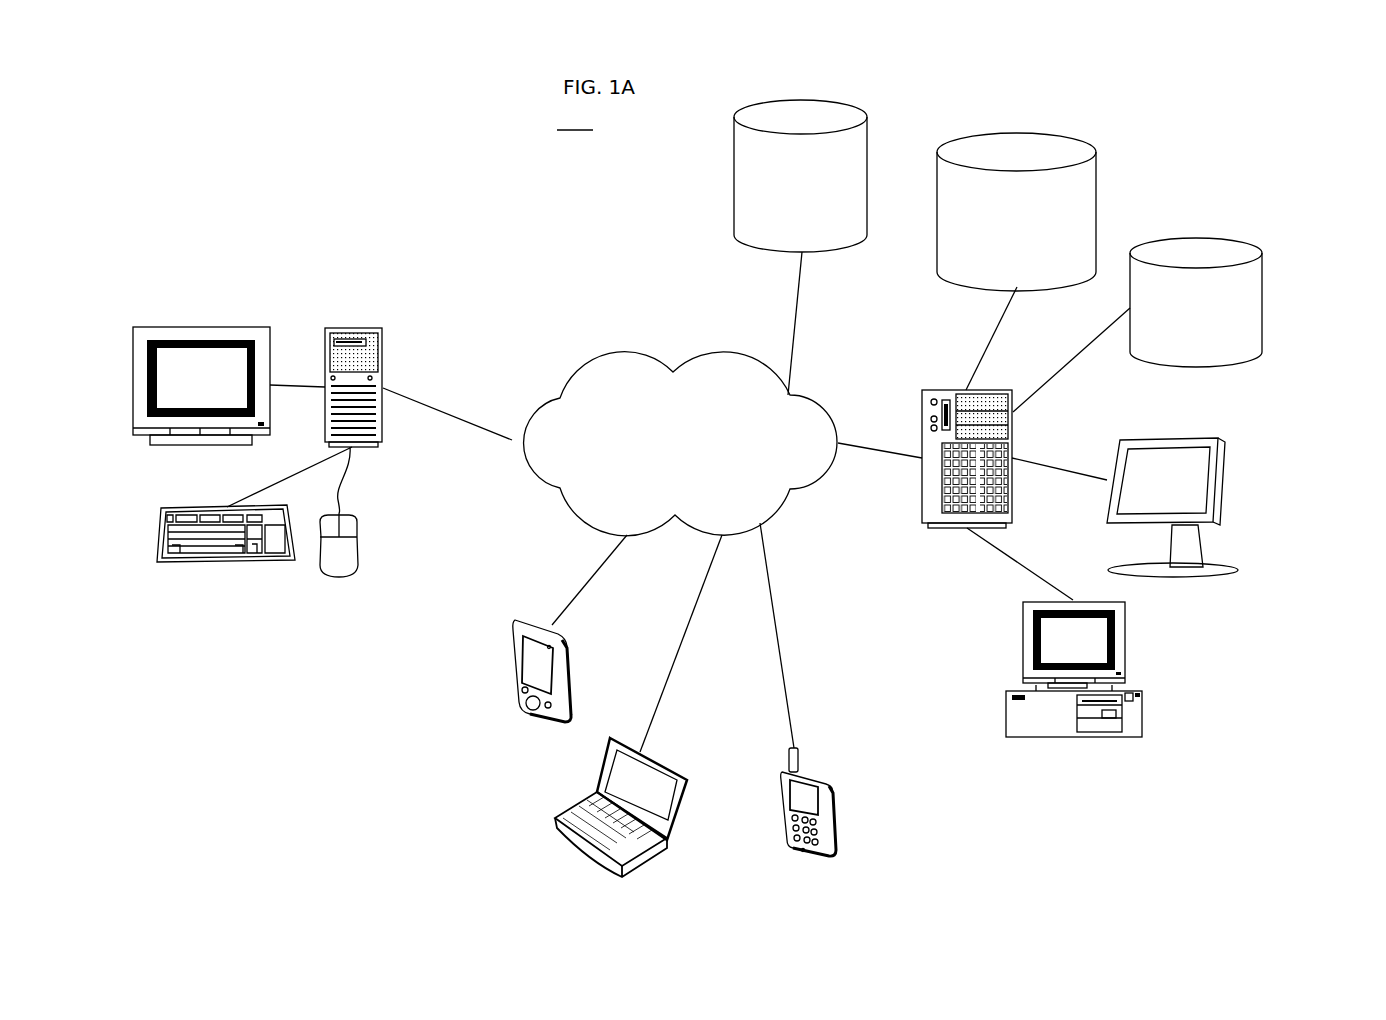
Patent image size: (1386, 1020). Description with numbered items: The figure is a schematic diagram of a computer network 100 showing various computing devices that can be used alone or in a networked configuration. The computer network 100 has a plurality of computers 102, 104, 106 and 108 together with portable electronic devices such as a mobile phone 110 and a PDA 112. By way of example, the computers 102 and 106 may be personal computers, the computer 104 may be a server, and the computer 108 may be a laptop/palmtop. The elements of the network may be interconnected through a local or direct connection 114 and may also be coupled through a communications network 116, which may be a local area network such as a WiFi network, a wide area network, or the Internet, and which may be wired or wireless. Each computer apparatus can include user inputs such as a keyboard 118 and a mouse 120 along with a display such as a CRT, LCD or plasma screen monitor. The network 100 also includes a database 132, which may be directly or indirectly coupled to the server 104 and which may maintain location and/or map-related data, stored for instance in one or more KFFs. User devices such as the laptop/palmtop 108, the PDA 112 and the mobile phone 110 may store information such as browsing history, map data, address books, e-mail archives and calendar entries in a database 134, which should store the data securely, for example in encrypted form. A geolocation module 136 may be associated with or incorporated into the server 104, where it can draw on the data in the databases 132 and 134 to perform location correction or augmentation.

The computer network 100 is at (576, 120).
The computer 102 is at (383, 338).
The computer 104 is at (922, 407).
The computer 106 is at (1006, 700).
The computer 108 is at (557, 820).
The mobile phone 110 is at (842, 810).
The PDA 112 is at (513, 692).
The local or direct connection 114 is at (1017, 560).
The communications network 116 is at (622, 353).
The keyboard 118 is at (220, 562).
The mouse 120 is at (357, 540).
The database 132 is at (1097, 165).
The database 134 is at (868, 183).
The geolocation module 136 is at (1262, 307).